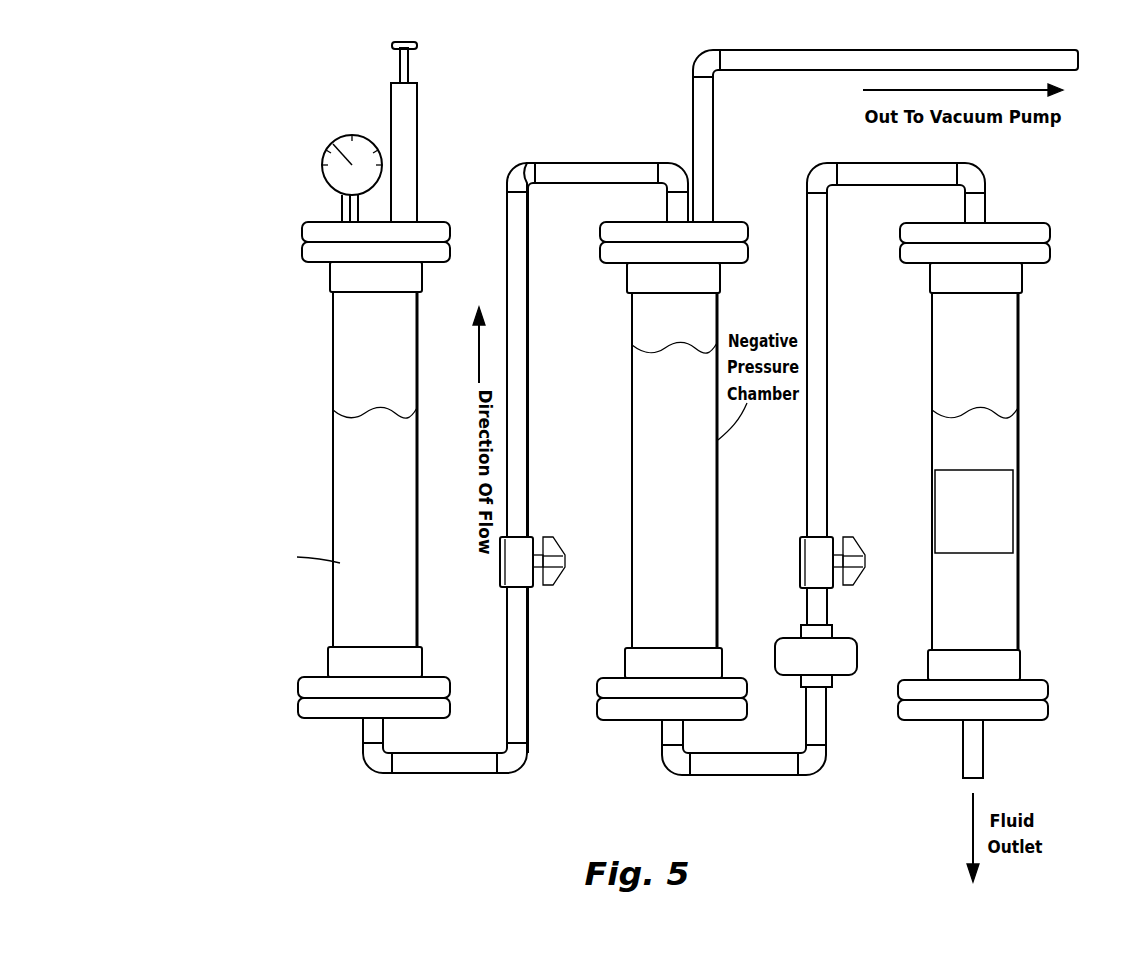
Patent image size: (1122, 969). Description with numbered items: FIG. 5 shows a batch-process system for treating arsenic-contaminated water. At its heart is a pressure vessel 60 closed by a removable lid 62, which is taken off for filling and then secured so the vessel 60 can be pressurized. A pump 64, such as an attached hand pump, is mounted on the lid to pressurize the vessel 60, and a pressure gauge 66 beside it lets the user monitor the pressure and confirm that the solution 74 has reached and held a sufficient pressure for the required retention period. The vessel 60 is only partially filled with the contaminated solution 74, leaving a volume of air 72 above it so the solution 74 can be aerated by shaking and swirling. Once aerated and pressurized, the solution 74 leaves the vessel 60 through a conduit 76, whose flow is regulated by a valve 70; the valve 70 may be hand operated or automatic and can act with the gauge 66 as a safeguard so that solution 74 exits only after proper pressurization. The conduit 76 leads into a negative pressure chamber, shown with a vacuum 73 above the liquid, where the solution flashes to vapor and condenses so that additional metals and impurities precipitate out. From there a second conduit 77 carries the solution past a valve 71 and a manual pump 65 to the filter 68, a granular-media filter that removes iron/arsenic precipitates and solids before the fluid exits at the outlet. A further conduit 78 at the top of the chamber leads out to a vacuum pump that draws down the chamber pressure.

The pressure vessel 60 is at (333, 372).
The removable lid 62 is at (302, 230).
The pump 64 is at (420, 148).
The manual pump 65 is at (832, 663).
The pressure gauge 66 is at (320, 158).
The filter 68 is at (1017, 398).
The valve 70 is at (532, 540).
The valve 71 is at (835, 540).
The air 72 is at (364, 368).
The vacuum 73 is at (667, 343).
The solution 74 is at (363, 535).
The conduit 76 is at (528, 380).
The conduit 77 is at (810, 380).
The conduit 78 is at (705, 155).